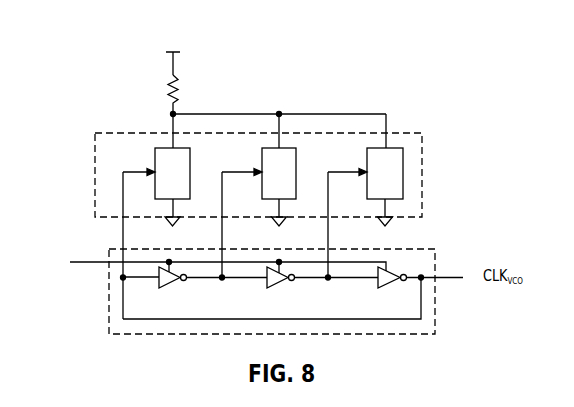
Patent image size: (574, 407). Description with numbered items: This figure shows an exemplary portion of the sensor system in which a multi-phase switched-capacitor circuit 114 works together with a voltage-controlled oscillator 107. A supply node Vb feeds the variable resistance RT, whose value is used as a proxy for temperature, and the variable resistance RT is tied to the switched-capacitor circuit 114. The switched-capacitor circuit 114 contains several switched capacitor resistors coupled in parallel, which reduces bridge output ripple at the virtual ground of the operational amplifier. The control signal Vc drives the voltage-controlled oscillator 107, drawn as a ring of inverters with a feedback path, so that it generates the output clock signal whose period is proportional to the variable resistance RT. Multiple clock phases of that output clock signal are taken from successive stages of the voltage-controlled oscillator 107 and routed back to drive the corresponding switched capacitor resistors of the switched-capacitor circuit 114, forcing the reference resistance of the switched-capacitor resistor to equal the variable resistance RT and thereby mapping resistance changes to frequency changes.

The switched-capacitor circuit 114 is at (97, 133).
The voltage-controlled oscillator 107 is at (108, 251).
The bias voltage supply Vb is at (173, 54).
The variable resistance RT is at (183, 94).
The control signal Vc is at (221, 264).